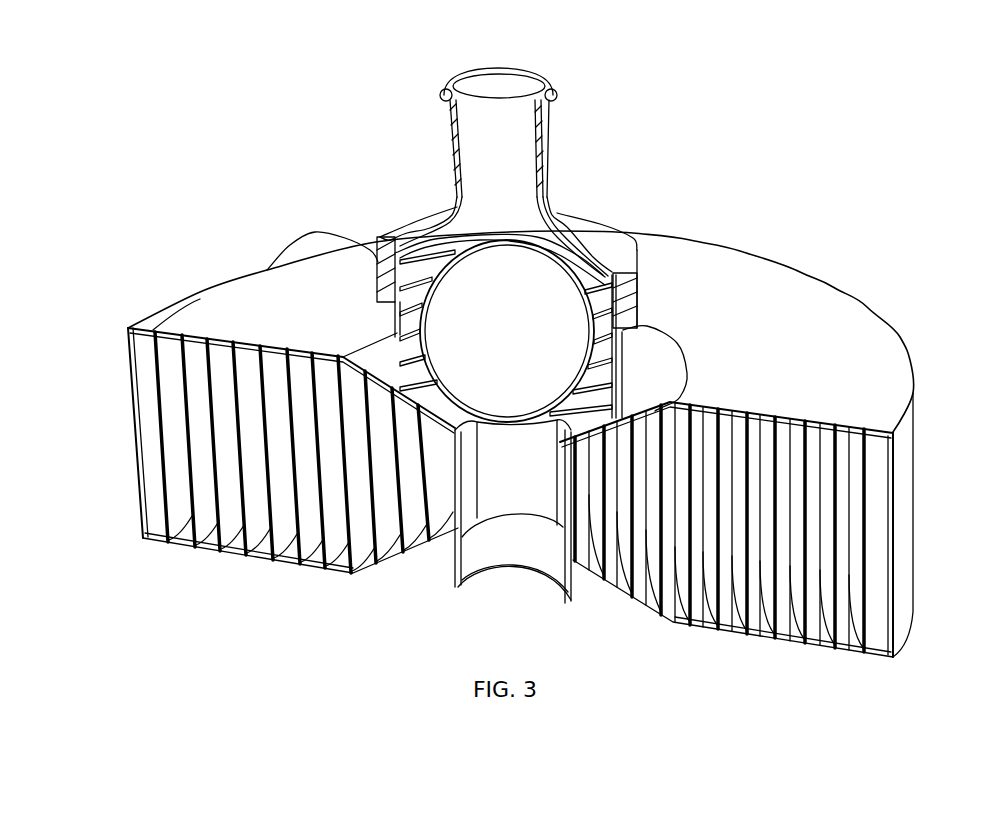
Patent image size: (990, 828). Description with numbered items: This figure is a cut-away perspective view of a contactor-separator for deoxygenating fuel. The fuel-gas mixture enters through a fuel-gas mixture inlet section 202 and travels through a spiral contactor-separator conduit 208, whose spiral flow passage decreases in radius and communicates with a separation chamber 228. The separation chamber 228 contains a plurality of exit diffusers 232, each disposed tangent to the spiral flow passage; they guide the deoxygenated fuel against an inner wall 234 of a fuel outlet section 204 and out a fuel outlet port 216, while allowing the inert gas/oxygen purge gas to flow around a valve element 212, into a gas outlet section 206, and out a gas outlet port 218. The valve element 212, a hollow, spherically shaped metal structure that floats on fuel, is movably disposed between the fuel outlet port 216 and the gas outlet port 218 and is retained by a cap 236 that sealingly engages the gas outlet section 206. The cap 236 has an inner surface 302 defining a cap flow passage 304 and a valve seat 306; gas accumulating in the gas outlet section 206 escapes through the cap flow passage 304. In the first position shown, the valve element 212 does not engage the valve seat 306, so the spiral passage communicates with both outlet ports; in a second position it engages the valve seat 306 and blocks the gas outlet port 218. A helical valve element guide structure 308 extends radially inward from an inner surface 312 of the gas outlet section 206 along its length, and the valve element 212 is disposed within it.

The fuel-gas mixture inlet section 202 is at (318, 246).
The fuel outlet section 204 is at (456, 578).
The gas outlet section 206 is at (632, 352).
The spiral contactor-separator conduit 208 is at (897, 372).
The valve element 212 is at (527, 246).
The fuel outlet port 216 is at (516, 569).
The gas outlet port 218 is at (497, 226).
The separation chamber 228 is at (497, 472).
The exit diffusers 232 is at (492, 418).
The inner wall 234 is at (566, 566).
The cap 236 is at (446, 91).
The inner surface 302 is at (537, 150).
The cap flow passage 304 is at (488, 94).
The valve seat 306 is at (578, 272).
The valve element guide structure 308 is at (410, 247).
The inner surface 312 is at (396, 338).